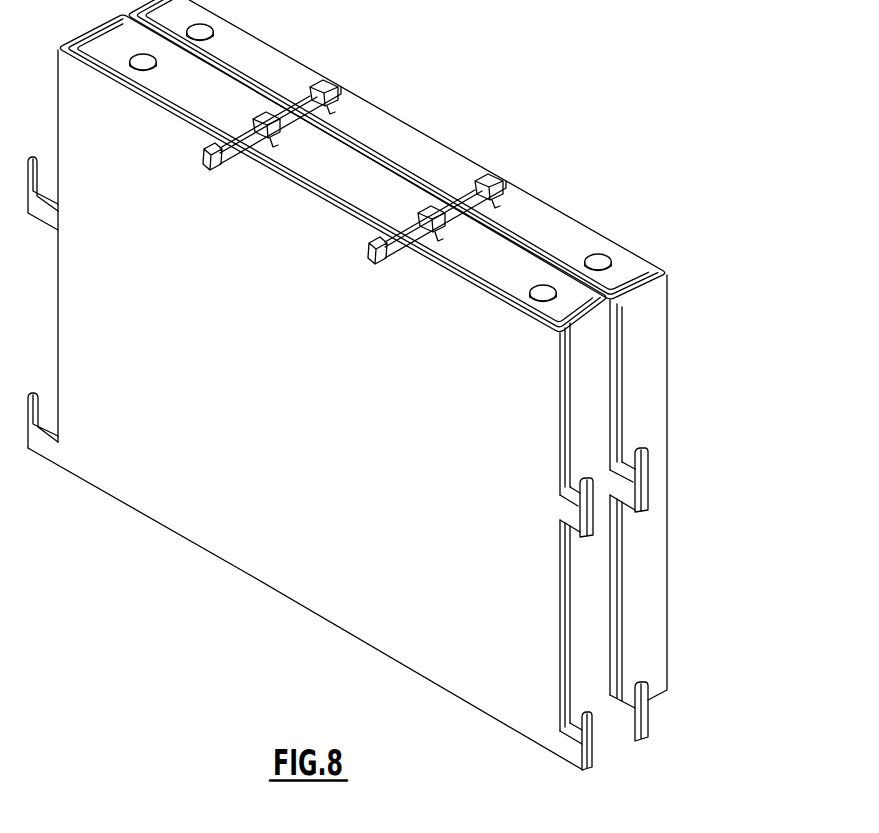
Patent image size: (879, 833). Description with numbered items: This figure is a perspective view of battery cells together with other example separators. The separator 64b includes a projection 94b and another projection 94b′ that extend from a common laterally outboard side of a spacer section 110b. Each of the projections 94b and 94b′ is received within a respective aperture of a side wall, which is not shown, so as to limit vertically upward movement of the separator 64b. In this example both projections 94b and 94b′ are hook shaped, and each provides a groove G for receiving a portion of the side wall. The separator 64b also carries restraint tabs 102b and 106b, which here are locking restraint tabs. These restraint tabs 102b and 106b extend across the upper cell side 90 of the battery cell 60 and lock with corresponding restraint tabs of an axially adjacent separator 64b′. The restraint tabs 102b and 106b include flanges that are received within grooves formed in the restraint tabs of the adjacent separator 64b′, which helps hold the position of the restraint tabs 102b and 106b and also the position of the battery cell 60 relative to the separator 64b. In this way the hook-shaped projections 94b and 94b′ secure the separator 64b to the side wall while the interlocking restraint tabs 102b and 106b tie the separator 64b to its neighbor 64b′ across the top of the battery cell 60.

The restraint tab 106b is at (293, 118).
The restraint tab 102b is at (459, 200).
The upper cell side 90 is at (575, 230).
The axially adjacent separator 64b′ is at (533, 358).
The separator 64b is at (617, 363).
The projection 94b is at (650, 487).
The projection 94b′ is at (666, 713).
The battery cell 60 is at (600, 565).
The groove G is at (633, 681).
The spacer section 110b is at (560, 673).